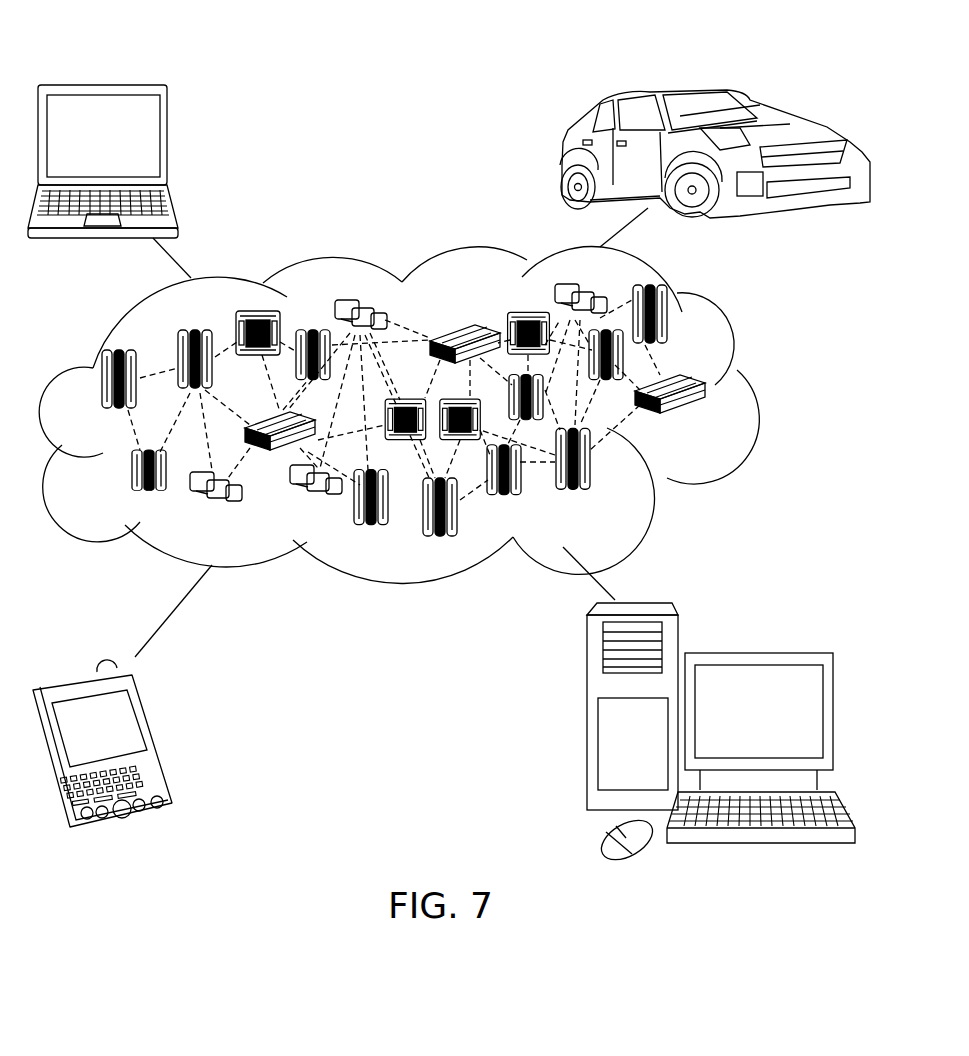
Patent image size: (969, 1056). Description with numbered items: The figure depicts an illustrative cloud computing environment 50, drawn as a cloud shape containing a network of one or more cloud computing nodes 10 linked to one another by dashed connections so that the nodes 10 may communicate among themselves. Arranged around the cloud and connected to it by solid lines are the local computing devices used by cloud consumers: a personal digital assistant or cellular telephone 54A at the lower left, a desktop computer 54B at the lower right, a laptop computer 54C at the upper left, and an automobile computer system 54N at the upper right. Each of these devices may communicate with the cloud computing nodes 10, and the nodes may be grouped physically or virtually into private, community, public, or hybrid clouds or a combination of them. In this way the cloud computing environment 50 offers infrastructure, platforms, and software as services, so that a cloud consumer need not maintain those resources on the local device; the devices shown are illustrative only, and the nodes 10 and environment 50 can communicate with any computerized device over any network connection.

The cloud computing node 10 is at (449, 410).
The cloud computing environment 50 is at (757, 392).
The personal digital assistant (PDA) or cellular telephone 54A is at (155, 740).
The desktop computer 54B is at (755, 652).
The laptop computer 54C is at (168, 138).
The automobile computer system 54N is at (561, 161).